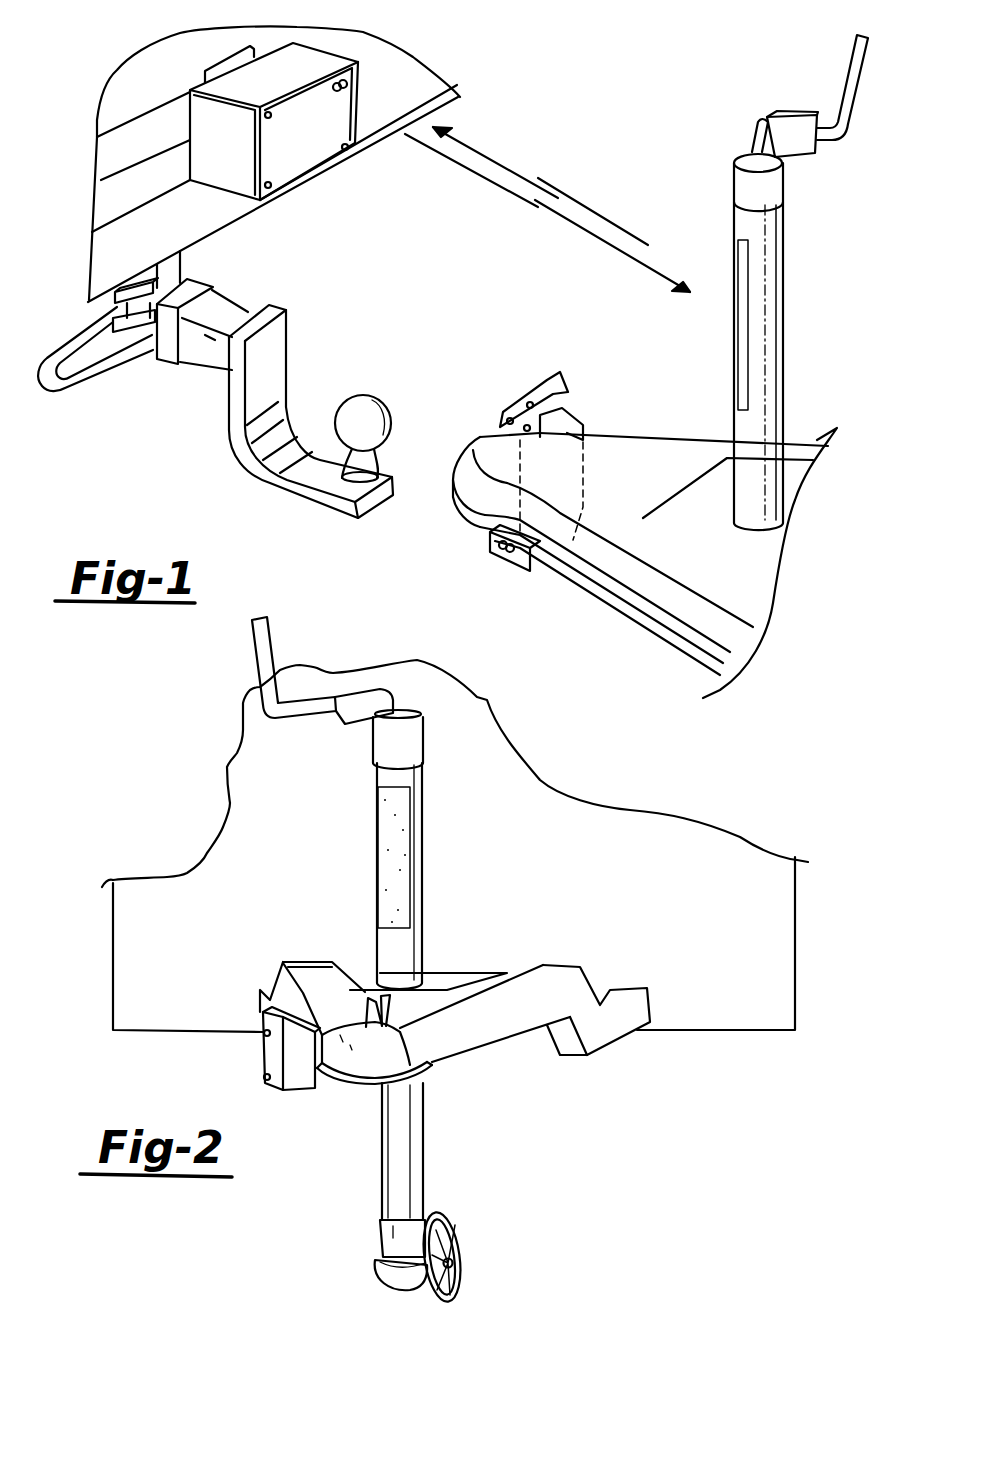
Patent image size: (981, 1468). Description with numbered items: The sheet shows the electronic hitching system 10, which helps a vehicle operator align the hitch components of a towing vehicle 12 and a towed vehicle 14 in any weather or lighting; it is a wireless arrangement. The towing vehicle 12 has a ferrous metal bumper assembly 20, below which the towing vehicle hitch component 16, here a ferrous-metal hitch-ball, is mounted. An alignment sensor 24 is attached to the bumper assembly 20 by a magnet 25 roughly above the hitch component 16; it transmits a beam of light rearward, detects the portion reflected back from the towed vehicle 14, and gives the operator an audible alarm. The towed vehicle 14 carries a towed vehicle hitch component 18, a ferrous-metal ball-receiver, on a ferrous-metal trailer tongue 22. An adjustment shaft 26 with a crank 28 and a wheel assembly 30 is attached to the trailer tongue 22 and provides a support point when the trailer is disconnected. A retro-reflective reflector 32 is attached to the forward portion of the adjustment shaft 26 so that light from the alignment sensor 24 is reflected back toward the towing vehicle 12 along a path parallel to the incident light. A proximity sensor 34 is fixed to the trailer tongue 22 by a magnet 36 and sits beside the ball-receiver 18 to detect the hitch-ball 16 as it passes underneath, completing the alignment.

In FIG. 1, the electronic hitching system 10 is at (500, 120).
In FIG. 1, the towing vehicle 12 is at (119, 80).
In FIG. 1, the towed vehicle 14 is at (775, 600).
In FIG. 2, the towed vehicle 14 is at (700, 833).
In FIG. 1, the towing vehicle hitch component 16 is at (373, 395).
In FIG. 1, the towed vehicle hitch component 18 is at (500, 418).
In FIG. 2, the towed vehicle hitch component 18 is at (368, 1055).
In FIG. 1, the bumper assembly 20 is at (218, 228).
In FIG. 1, the trailer tongue 22 is at (673, 600).
In FIG. 2, the trailer tongue 22 is at (610, 1047).
In FIG. 1, the alignment sensor 24 is at (318, 155).
In FIG. 1, the magnet 25 is at (217, 62).
In FIG. 1, the adjustment shaft 26 is at (781, 365).
In FIG. 2, the adjustment shaft 26 is at (425, 728).
In FIG. 1, the crank 28 is at (840, 86).
In FIG. 2, the crank 28 is at (272, 634).
In FIG. 2, the wheel assembly 30 is at (452, 1213).
In FIG. 1, the retro-reflective reflector 32 is at (736, 338).
In FIG. 2, the retro-reflective reflector 32 is at (395, 897).
In FIG. 1, the proximity sensor 34 is at (512, 567).
In FIG. 2, the proximity sensor 34 is at (290, 1100).
In FIG. 2, the magnet 36 is at (320, 1077).